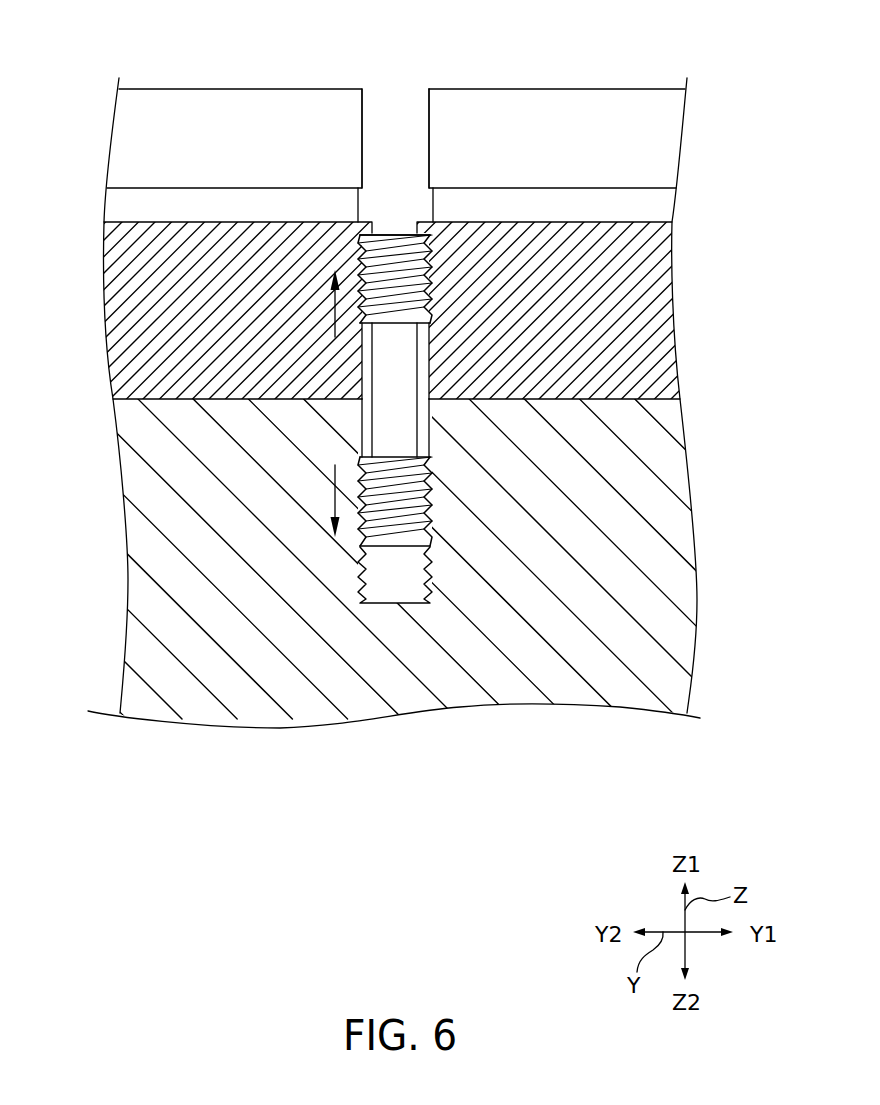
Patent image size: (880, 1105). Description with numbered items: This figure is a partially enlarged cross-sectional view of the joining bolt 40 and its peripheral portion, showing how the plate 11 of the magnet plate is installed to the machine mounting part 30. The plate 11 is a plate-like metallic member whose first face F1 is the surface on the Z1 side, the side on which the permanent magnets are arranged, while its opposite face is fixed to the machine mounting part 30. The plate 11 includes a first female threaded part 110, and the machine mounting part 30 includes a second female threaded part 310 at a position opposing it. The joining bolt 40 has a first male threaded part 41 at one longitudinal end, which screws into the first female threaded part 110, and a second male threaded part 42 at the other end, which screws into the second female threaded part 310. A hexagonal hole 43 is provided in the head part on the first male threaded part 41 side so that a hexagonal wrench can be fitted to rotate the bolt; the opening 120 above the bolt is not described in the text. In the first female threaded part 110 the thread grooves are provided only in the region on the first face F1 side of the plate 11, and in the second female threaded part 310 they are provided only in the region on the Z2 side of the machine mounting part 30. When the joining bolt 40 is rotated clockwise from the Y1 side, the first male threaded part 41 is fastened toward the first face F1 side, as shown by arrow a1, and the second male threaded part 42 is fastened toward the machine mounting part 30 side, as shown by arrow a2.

The plate 11 is at (650, 280).
The machine mounting part 30 is at (648, 542).
The joining bolt 40 is at (297, 296).
The first male threaded part 41 is at (432, 267).
The second male threaded part 42 is at (367, 540).
The hexagonal hole 43 is at (362, 236).
The first female threaded part 110 is at (430, 365).
The slot 120 is at (400, 148).
The second female threaded part 310 is at (432, 473).
The first face F1 is at (222, 222).
The arrow a1 is at (333, 315).
The arrow a2 is at (367, 488).